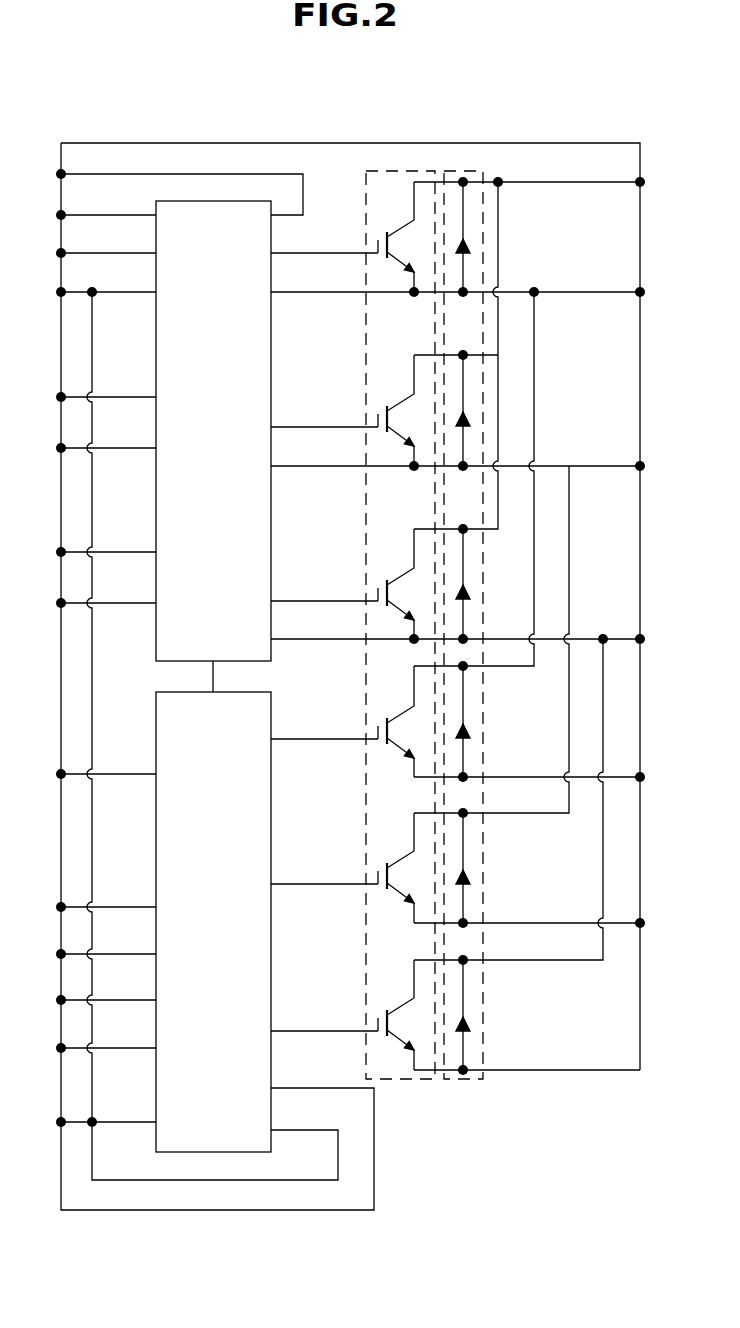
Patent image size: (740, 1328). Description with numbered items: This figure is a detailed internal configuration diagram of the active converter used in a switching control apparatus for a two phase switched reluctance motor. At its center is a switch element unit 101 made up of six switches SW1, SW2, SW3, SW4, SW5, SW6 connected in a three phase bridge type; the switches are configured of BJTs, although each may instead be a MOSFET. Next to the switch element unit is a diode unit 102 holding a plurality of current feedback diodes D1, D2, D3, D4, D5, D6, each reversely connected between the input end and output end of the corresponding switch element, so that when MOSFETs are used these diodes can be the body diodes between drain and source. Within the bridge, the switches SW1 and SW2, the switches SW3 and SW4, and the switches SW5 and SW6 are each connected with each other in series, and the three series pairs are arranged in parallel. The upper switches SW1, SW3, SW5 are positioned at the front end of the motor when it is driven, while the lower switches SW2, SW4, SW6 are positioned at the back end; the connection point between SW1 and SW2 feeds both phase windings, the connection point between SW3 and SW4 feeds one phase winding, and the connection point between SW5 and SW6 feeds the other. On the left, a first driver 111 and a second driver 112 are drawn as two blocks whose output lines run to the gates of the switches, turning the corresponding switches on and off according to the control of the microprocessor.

The switch element unit 101 is at (380, 171).
The diode unit 102 is at (465, 171).
The first driver 111 is at (213, 201).
The second driver 112 is at (217, 1152).
The switch element SW1 is at (342, 237).
The switch element SW2 is at (342, 721).
The switch element SW3 is at (342, 410).
The switch element SW4 is at (342, 868).
The switch element SW5 is at (342, 584).
The switch element SW6 is at (342, 1015).
The current feedback diode D1 is at (494, 237).
The current feedback diode D2 is at (488, 721).
The current feedback diode D3 is at (494, 410).
The current feedback diode D4 is at (488, 868).
The current feedback diode D5 is at (488, 584).
The current feedback diode D6 is at (488, 1015).